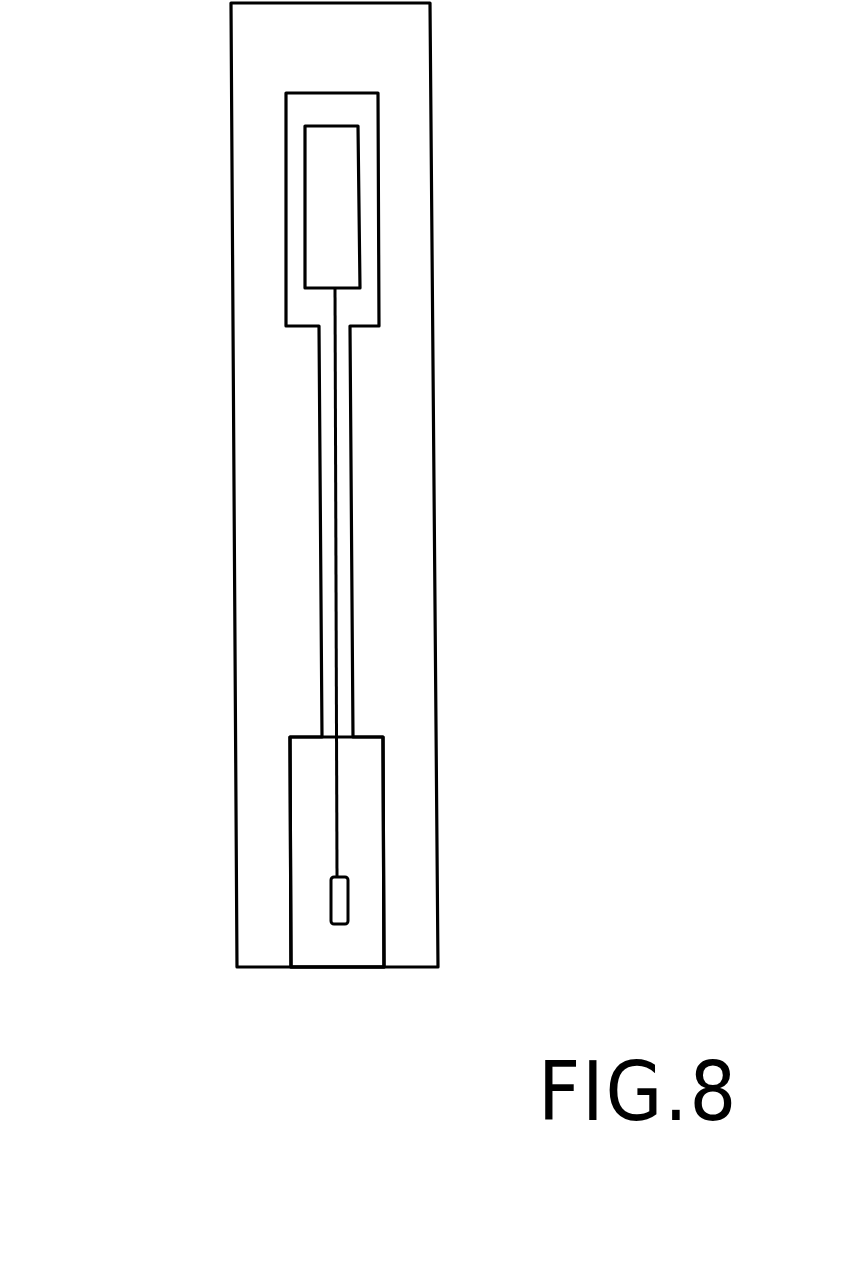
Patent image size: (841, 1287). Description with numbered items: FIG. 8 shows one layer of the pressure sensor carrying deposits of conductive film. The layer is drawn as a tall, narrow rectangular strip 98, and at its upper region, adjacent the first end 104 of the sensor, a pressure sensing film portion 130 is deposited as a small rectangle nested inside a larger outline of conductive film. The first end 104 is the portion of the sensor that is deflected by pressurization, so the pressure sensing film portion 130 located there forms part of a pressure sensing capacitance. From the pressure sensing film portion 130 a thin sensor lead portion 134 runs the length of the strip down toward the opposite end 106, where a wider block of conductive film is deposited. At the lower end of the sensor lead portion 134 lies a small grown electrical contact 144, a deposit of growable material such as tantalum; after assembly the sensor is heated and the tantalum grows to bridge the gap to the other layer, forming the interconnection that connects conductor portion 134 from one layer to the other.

The substrate 98 is at (431, 77).
The first end 104 is at (218, 180).
The contact pad 106 is at (178, 925).
The pressure sensing film portion 130 is at (343, 168).
The sensor lead portion 134 is at (337, 492).
The grown electrical contact 144 is at (342, 897).